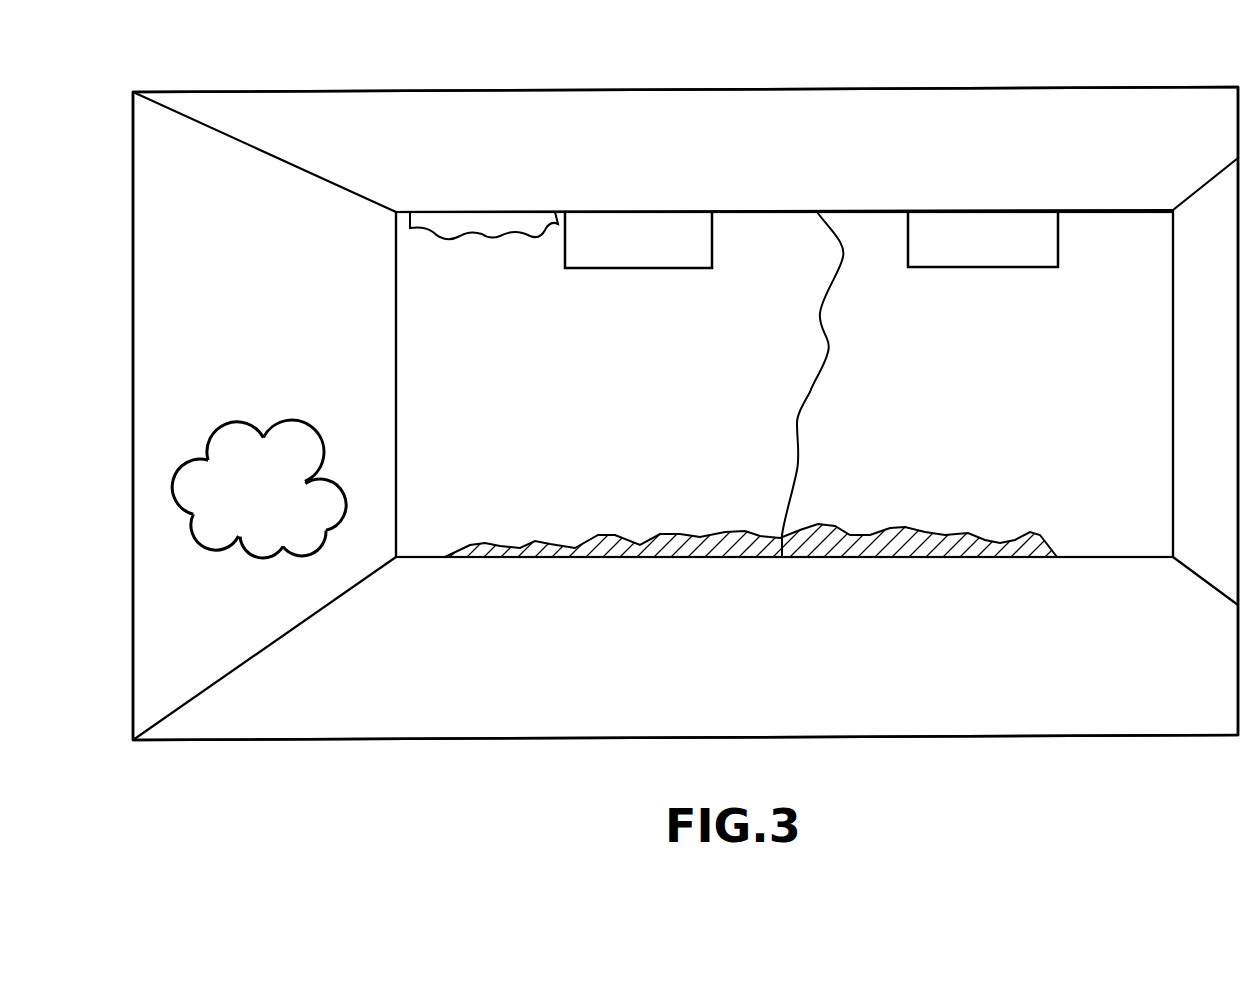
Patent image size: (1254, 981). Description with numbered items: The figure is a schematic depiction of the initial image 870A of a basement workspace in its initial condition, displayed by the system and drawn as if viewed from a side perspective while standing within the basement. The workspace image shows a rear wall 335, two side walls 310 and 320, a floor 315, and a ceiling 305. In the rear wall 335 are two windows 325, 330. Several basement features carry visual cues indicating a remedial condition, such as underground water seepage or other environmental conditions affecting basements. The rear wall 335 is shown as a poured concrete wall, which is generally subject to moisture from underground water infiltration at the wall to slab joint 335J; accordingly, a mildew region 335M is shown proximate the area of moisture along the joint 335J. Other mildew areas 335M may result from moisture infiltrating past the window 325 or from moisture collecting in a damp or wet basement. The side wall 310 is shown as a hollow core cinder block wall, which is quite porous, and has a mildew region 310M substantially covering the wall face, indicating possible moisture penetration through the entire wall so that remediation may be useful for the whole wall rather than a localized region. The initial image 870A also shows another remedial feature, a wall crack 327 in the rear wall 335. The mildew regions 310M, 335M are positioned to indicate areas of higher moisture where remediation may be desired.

The image 870A is at (760, 63).
The ceiling 305 is at (685, 124).
The side wall 310 is at (209, 416).
The mildew region 310M is at (237, 420).
The floor 315 is at (685, 694).
The side wall 320 is at (1212, 411).
The window 325 is at (622, 271).
The wall crack 327 is at (827, 365).
The window 330 is at (967, 270).
The rear wall 335 is at (784, 384).
The mildew region 335M is at (455, 222).
The wall to slab joint 335J is at (848, 560).